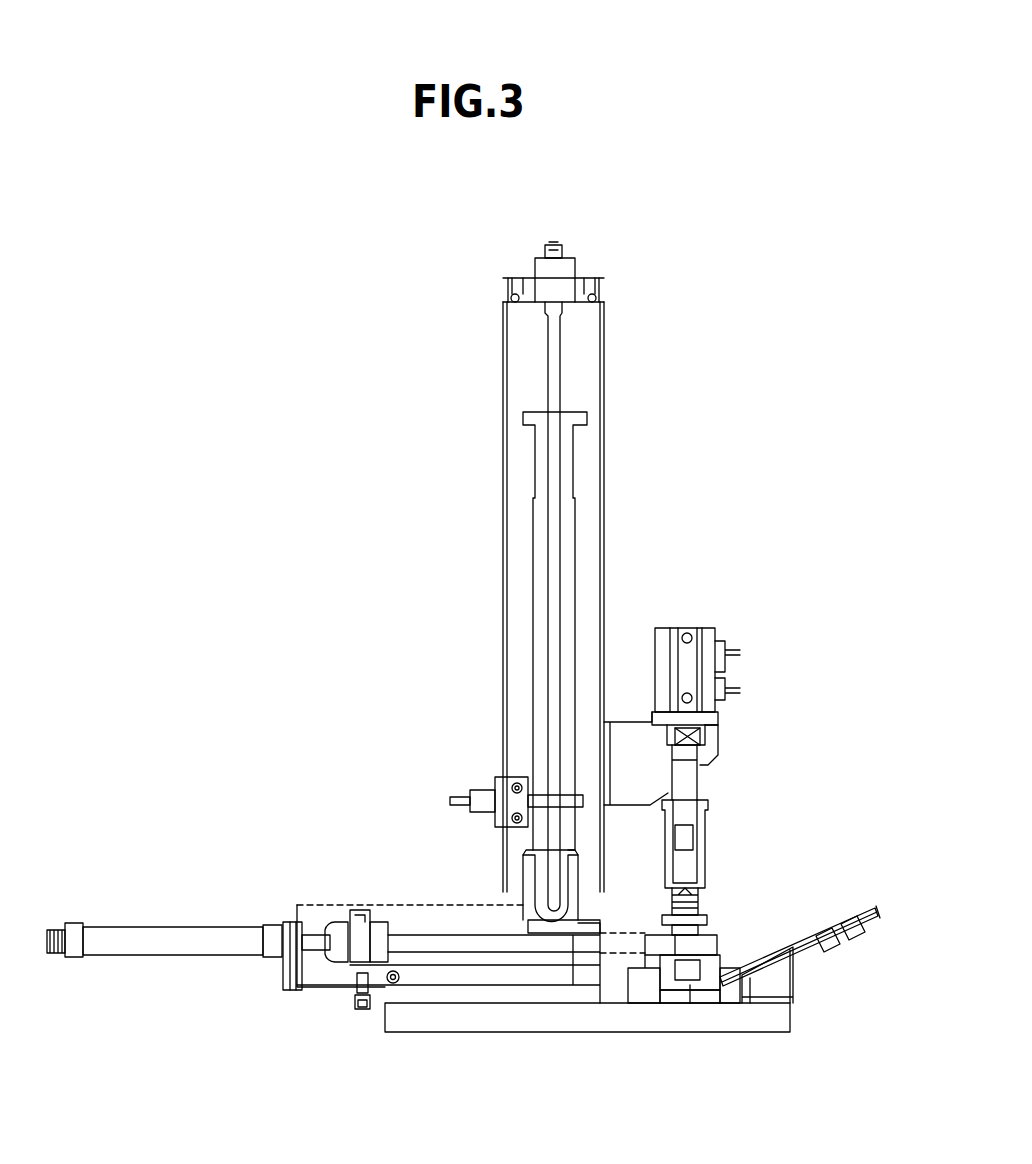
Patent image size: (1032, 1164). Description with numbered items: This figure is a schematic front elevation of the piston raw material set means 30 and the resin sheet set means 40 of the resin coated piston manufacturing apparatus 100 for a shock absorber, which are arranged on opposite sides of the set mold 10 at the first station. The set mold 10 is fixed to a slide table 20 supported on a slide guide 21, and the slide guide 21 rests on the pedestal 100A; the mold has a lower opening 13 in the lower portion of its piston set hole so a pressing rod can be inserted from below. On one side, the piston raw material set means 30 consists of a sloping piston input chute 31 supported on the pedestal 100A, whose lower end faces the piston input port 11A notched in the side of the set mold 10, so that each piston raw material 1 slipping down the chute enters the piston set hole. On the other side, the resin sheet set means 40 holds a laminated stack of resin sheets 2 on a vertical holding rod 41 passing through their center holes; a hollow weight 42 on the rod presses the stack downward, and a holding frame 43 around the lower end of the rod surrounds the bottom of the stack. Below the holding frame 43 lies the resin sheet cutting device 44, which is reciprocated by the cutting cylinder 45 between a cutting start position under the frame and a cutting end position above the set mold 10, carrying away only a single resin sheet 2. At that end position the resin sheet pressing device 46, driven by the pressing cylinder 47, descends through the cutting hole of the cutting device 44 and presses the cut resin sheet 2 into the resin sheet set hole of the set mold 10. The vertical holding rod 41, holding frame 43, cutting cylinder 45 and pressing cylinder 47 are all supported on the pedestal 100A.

The resin coated piston manufacturing apparatus 100 is at (712, 418).
The pedestal 100A is at (435, 1020).
The resin sheet set means 40 is at (278, 888).
The vertical holding rod 41 is at (555, 353).
The weight 42 is at (535, 457).
The holding frame 43 is at (523, 893).
The resin sheet cutting device 44 is at (413, 905).
The cutting cylinder 45 is at (187, 925).
The resin sheet pressing device 46 is at (713, 920).
The pressing cylinder 47 is at (667, 645).
The resin sheet 2 is at (720, 945).
The piston input port 11A is at (710, 963).
The piston raw material 1 is at (843, 905).
The piston raw material set means 30 is at (862, 905).
The piston input chute 31 is at (812, 950).
The set mold 10 is at (720, 995).
The lower opening 13 is at (690, 990).
The slide table 20 is at (658, 980).
The slide guide 21 is at (630, 975).